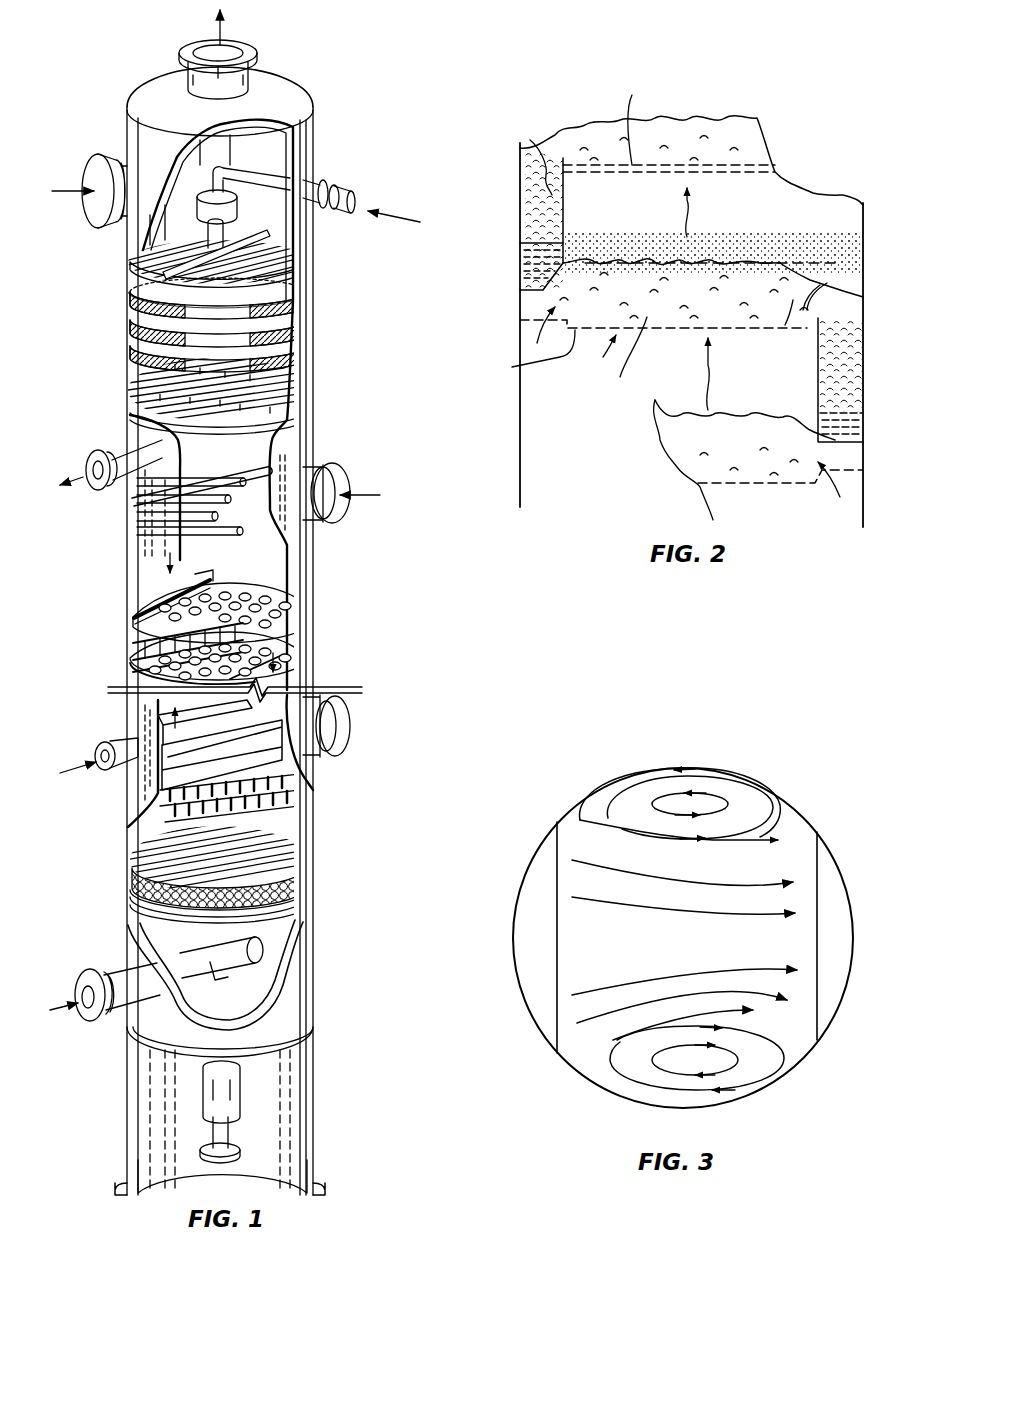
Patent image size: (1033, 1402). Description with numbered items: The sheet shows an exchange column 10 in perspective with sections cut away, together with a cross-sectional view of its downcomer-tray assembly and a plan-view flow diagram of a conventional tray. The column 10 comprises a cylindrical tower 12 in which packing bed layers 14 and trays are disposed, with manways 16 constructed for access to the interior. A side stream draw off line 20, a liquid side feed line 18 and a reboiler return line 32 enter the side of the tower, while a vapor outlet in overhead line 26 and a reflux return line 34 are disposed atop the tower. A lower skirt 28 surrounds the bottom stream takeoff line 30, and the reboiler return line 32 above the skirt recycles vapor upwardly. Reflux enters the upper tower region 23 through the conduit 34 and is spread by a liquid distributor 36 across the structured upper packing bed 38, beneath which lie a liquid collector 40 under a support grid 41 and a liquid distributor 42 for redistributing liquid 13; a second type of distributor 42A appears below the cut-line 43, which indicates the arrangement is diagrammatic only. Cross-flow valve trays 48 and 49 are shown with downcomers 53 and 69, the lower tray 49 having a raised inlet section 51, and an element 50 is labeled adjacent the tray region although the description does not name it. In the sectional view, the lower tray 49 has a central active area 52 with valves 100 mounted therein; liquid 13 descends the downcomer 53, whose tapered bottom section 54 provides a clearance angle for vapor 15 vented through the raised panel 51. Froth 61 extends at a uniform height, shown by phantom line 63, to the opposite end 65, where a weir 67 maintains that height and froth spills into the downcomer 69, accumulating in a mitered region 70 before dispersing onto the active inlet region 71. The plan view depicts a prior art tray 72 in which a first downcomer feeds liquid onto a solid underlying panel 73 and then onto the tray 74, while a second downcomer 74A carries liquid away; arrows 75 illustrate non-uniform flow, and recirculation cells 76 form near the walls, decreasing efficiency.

In FIG. 1, the exchange column 10 is at (352, 95).
In FIG. 1, the cylindrical tower 12 is at (300, 177).
In FIG. 2, the cylindrical tower 12 is at (863, 250).
In FIG. 3, the cylindrical tower 12 is at (837, 862).
In FIG. 1, the liquid 13 is at (420, 222).
In FIG. 2, the liquid 13 is at (522, 262).
In FIG. 1, the packing bed layers 14 is at (298, 293).
In FIG. 1, the vapor 15 is at (222, 30).
In FIG. 2, the vapor 15 is at (690, 205).
In FIG. 1, the manways 16 is at (98, 170).
In FIG. 1, the liquid side feed line 18 is at (112, 774).
In FIG. 1, the side stream draw off line 20 is at (128, 445).
In FIG. 1, the upper tower region 23 is at (132, 322).
In FIG. 1, the overhead line 26 is at (258, 53).
In FIG. 1, the lower skirt 28 is at (290, 1136).
In FIG. 1, the bottom stream takeoff line 30 is at (240, 1101).
In FIG. 1, the reboiler return line 32 is at (120, 1012).
In FIG. 1, the reflux return line 34 is at (335, 185).
In FIG. 1, the liquid distributor 36 is at (135, 256).
In FIG. 1, the upper packing bed 38 is at (133, 286).
In FIG. 1, the liquid collector 40 is at (290, 390).
In FIG. 1, the support grid 41 is at (298, 347).
In FIG. 1, the liquid distributor 42 is at (125, 517).
In FIG. 1, the second type of distributor 42A is at (305, 788).
In FIG. 1, the cut-line 43 is at (342, 684).
In FIG. 1, the cross-flow valve tray 48 is at (253, 578).
In FIG. 2, the cross-flow valve tray 48 is at (765, 168).
In FIG. 1, the cross-flow valve tray 49 is at (130, 671).
In FIG. 2, the cross-flow valve tray 49 is at (645, 343).
In FIG. 1, the downcomer wall 50 is at (298, 592).
In FIG. 1, the raised inlet section 51 is at (120, 648).
In FIG. 2, the raised inlet section 51 is at (523, 315).
In FIG. 2, the central active area 52 is at (603, 360).
In FIG. 1, the downcomer 53 is at (140, 625).
In FIG. 2, the downcomer 53 is at (558, 148).
In FIG. 2, the tapered bottom section 54 is at (528, 278).
In FIG. 2, the froth 61 is at (732, 118).
In FIG. 2, the froth height line 63 is at (630, 262).
In FIG. 2, the opposite end 65 is at (835, 284).
In FIG. 2, the weir 67 is at (825, 322).
In FIG. 1, the downcomer 69 is at (282, 660).
In FIG. 2, the downcomer 69 is at (805, 388).
In FIG. 2, the mitered region 70 is at (827, 433).
In FIG. 2, the active inlet region 71 is at (845, 470).
In FIG. 3, the prior art tray 72 is at (789, 824).
In FIG. 3, the solid underlying panel 73 is at (538, 988).
In FIG. 3, the tray 74 is at (760, 944).
In FIG. 3, the second downcomer 74A is at (833, 968).
In FIG. 3, the arrows 75 is at (580, 860).
In FIG. 3, the recirculation cells 76 is at (652, 796).
In FIG. 2, the valves 100 is at (635, 237).